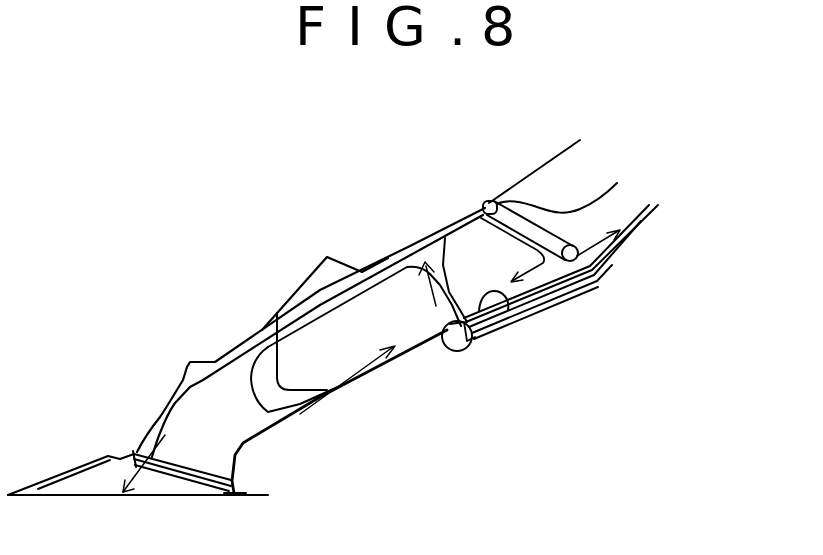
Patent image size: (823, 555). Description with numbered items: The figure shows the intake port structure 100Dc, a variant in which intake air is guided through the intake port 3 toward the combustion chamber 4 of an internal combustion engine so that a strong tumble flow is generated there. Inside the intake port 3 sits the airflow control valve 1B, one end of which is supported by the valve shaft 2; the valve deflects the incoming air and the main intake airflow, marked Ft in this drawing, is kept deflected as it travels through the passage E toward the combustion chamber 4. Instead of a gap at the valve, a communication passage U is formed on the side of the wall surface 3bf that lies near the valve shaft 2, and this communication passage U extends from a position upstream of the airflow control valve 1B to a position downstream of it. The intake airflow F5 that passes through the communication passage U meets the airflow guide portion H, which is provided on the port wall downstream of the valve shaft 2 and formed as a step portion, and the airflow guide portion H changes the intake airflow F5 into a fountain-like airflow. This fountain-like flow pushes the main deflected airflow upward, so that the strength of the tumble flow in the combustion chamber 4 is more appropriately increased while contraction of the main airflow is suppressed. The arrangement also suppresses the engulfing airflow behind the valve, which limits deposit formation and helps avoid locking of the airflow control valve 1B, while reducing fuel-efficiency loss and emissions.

The intake port structure 100Dc is at (688, 150).
The airflow control valve 1B is at (527, 226).
The passage E is at (487, 197).
The front trim line Ft is at (597, 193).
The intake port 3 is at (289, 304).
The combustion chamber 4 is at (87, 482).
The airflow guide portion H is at (454, 352).
The wall surface 3bf is at (485, 314).
The intake airflow F5 is at (508, 300).
The communication passage U is at (551, 292).
The valve shaft 2 is at (572, 262).